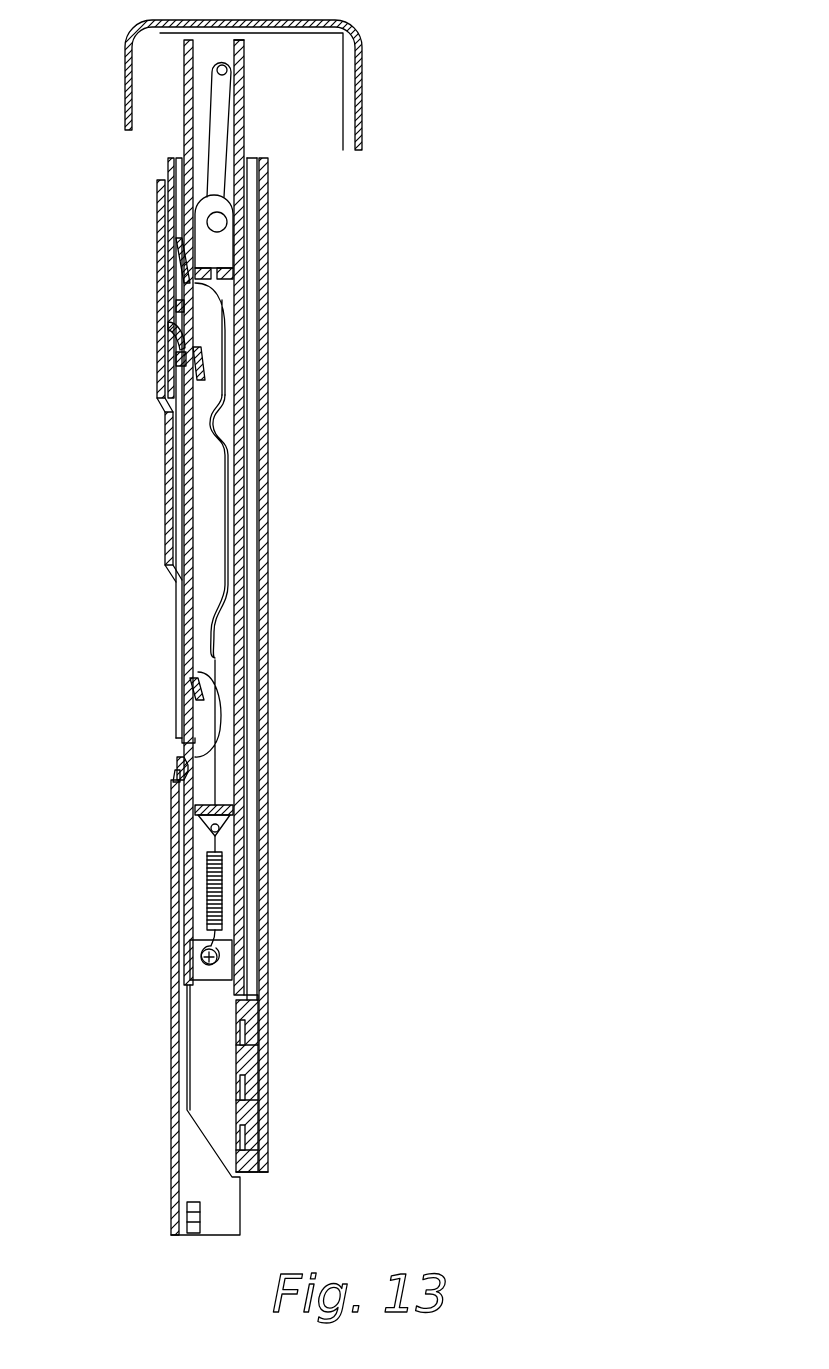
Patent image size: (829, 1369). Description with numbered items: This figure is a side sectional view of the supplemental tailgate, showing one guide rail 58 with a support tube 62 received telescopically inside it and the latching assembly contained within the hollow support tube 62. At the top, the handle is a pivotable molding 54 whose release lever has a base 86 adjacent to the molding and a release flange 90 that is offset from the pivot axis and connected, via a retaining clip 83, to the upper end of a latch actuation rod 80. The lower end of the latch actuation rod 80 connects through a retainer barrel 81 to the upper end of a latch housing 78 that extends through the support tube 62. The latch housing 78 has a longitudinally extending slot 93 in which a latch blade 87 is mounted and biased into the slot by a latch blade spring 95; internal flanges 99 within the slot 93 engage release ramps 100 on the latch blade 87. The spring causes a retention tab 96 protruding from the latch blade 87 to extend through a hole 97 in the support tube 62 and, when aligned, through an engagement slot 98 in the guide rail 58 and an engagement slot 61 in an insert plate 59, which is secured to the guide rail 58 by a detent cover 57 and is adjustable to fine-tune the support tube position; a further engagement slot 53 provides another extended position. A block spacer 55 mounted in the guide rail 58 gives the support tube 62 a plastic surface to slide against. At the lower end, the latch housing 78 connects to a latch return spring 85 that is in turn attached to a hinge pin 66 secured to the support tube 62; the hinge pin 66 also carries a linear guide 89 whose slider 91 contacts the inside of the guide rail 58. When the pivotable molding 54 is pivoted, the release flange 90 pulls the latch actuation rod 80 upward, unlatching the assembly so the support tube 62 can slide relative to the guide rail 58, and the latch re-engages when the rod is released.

The engagement slot 53 is at (183, 612).
The pivotable molding 54 is at (365, 98).
The block spacer 55 is at (165, 450).
The detent cover 57 is at (157, 202).
The guide rail 58 is at (268, 340).
The insert plate 59 is at (180, 340).
The engagement slot 61 is at (195, 300).
The support tube 62 is at (250, 110).
The hinge pin 66 is at (200, 957).
The latch housing 78 is at (233, 198).
The latch actuation rod 80 is at (216, 133).
The retainer barrel 81 is at (185, 262).
The retaining clip 83 is at (248, 68).
The latch return spring 85 is at (208, 892).
The base 86 is at (182, 35).
The latch blade 87 is at (230, 380).
The linear guide 89 is at (270, 1168).
The release flange 90 is at (217, 75).
The slider 91 is at (265, 1003).
The slot 93 is at (230, 292).
The latch blade spring 95 is at (228, 450).
The retention tab 96 is at (177, 307).
The hole 97 is at (175, 773).
The engagement slot 98 is at (178, 750).
The internal flange 99 is at (182, 357).
The release ramp 100 is at (197, 358).